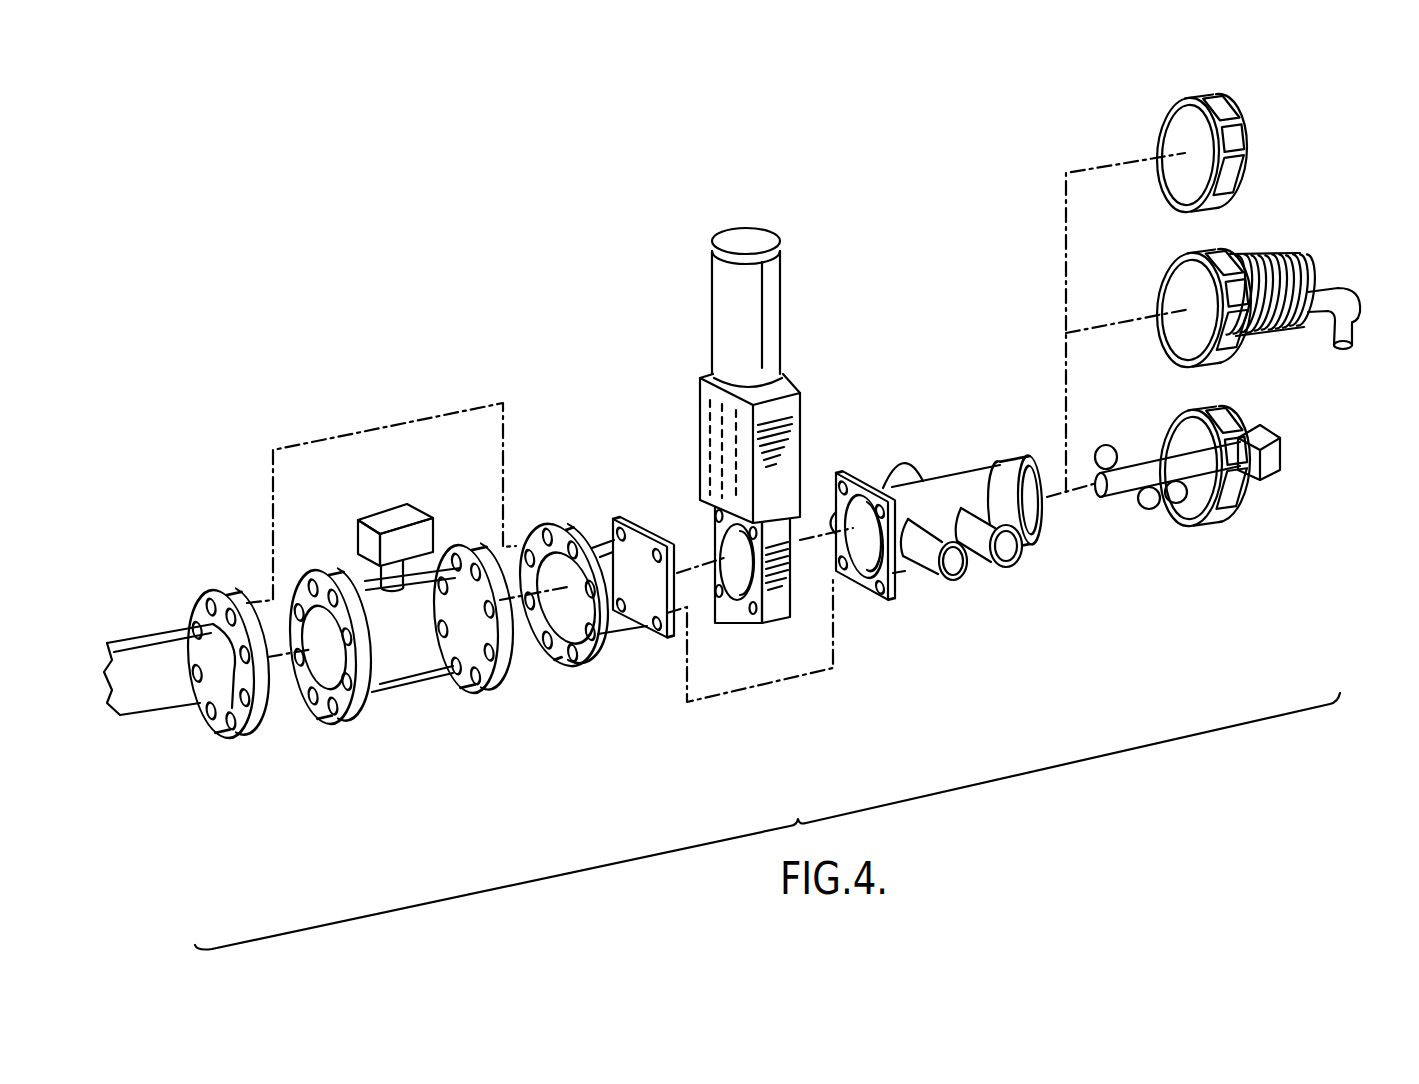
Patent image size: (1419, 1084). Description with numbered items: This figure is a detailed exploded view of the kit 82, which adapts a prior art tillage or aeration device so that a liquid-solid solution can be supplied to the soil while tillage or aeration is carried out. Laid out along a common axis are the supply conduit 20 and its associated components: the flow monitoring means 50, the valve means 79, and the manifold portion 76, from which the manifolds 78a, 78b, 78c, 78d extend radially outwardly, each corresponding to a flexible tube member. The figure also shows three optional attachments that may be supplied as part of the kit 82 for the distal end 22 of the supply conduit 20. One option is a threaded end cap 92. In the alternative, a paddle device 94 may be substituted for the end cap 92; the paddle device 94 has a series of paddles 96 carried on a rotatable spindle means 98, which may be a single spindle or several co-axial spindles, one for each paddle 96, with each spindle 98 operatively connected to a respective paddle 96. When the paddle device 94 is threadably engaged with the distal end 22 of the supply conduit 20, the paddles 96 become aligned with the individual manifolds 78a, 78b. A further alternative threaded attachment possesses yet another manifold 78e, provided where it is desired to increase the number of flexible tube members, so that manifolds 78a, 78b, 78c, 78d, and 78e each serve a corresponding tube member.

The supply conduit 20 is at (158, 702).
The distal end 22 is at (193, 640).
The flow monitoring means 50 is at (400, 675).
The manifold portion 76 is at (975, 462).
The manifold 78a is at (952, 570).
The manifold 78b is at (862, 468).
The manifold 78c is at (912, 466).
The manifold 78d is at (1005, 555).
The manifold 78e is at (1352, 342).
The valve means 79 is at (727, 313).
The kit 82 is at (410, 324).
The threaded end cap 92 is at (1222, 118).
The paddle device 94 is at (1240, 510).
The paddles 96 is at (1100, 447).
The spindle means 98 is at (1150, 467).